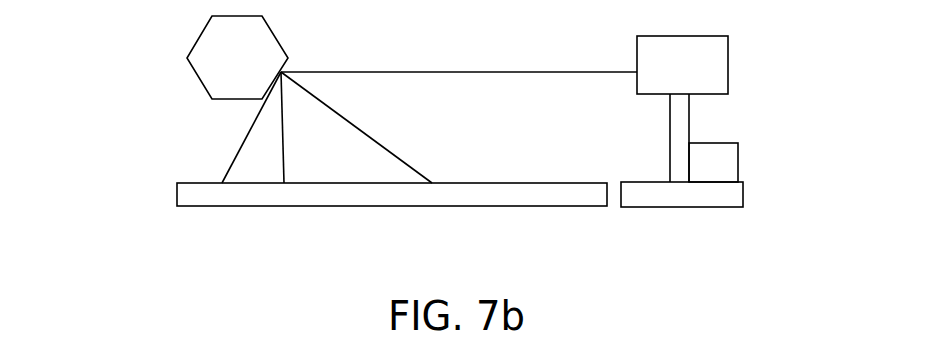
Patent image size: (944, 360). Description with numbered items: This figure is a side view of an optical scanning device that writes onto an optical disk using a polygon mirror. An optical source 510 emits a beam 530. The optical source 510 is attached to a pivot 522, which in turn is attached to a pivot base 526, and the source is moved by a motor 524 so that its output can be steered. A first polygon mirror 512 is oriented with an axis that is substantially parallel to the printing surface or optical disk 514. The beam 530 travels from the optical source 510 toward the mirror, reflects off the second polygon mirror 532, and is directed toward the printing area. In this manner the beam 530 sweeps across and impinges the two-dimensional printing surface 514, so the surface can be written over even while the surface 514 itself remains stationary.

The optical source 510 is at (729, 66).
The first polygon mirror 512 is at (187, 58).
The printing surface or optical disk 514 is at (177, 190).
The pivot 522 is at (690, 112).
The motor 524 is at (739, 158).
The pivot base 526 is at (744, 190).
The beam 530 is at (457, 71).
The second polygon mirror 532 is at (257, 120).